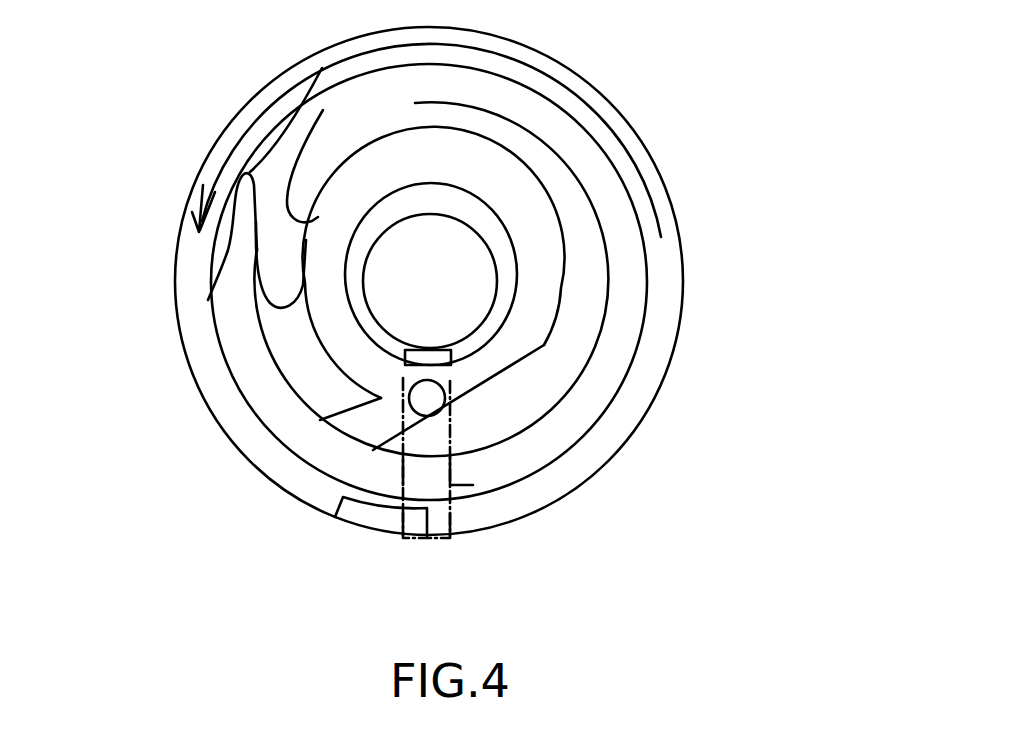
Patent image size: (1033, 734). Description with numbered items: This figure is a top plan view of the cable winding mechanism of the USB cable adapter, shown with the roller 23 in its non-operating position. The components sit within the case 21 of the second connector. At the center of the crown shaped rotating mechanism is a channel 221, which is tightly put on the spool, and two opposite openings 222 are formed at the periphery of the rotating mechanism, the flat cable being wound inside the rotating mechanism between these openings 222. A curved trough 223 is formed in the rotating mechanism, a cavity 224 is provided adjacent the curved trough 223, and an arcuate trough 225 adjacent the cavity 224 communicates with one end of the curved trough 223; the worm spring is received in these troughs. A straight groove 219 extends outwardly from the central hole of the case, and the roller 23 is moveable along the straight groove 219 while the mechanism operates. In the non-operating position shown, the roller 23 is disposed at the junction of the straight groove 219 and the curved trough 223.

The case 21 is at (210, 149).
The straight groove 219 is at (507, 493).
The channel 221 is at (466, 290).
The openings 222 is at (372, 512).
The curved trough 223 is at (467, 173).
The cavity 224 is at (283, 300).
The arcuate trough 225 is at (345, 128).
The roller 23 is at (445, 400).